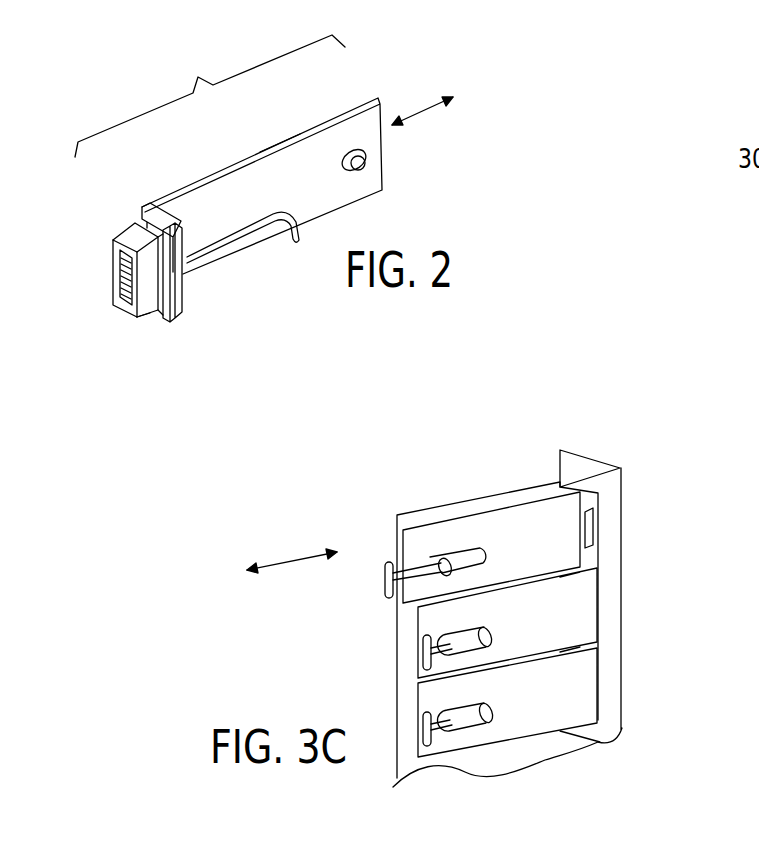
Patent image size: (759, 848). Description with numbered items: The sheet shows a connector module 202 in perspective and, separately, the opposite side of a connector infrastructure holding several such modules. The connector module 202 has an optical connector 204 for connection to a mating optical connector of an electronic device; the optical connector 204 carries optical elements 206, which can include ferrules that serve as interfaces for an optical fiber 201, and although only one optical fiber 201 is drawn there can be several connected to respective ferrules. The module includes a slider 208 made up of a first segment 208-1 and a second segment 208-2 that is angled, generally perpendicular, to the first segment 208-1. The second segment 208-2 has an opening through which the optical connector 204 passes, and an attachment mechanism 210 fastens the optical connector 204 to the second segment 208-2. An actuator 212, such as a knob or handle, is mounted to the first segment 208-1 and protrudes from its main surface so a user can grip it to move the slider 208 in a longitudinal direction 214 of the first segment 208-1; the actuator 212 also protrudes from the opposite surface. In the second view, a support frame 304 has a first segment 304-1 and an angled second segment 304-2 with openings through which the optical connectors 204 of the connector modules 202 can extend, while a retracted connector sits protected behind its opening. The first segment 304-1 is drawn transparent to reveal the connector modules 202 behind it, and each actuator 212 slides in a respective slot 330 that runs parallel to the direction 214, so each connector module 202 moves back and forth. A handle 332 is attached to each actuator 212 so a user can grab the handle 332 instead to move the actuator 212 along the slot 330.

In FIG. 2, the optical fiber 201 is at (223, 242).
In FIG. 2, the connector module 202 is at (383, 92).
In FIG. 3C, the connector module 202 is at (565, 535).
In FIG. 2, the optical connector 204 is at (150, 305).
In FIG. 2, the optical elements 206 is at (113, 292).
In FIG. 2, the slider 208 is at (210, 96).
In FIG. 2, the first segment 208-1 is at (260, 153).
In FIG. 2, the second segment 208-2 is at (164, 205).
In FIG. 2, the attachment mechanism 210 is at (182, 289).
In FIG. 2, the actuator 212 is at (368, 163).
In FIG. 3C, the actuator 212 is at (445, 558).
In FIG. 2, the longitudinal direction 214 is at (427, 108).
In FIG. 3C, the longitudinal direction 214 is at (298, 562).
In FIG. 3C, the support frame 304 is at (610, 492).
In FIG. 3C, the first segment 304-1 is at (508, 492).
In FIG. 3C, the second segment 304-2 is at (590, 457).
In FIG. 3C, the slot 330 is at (463, 553).
In FIG. 3C, the handle 332 is at (385, 580).